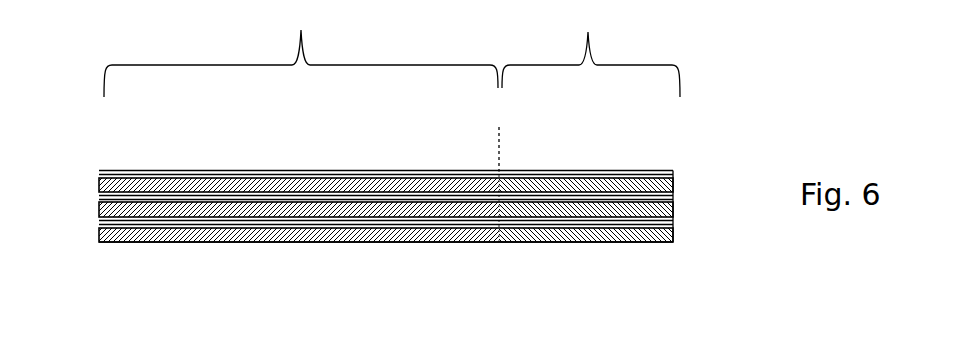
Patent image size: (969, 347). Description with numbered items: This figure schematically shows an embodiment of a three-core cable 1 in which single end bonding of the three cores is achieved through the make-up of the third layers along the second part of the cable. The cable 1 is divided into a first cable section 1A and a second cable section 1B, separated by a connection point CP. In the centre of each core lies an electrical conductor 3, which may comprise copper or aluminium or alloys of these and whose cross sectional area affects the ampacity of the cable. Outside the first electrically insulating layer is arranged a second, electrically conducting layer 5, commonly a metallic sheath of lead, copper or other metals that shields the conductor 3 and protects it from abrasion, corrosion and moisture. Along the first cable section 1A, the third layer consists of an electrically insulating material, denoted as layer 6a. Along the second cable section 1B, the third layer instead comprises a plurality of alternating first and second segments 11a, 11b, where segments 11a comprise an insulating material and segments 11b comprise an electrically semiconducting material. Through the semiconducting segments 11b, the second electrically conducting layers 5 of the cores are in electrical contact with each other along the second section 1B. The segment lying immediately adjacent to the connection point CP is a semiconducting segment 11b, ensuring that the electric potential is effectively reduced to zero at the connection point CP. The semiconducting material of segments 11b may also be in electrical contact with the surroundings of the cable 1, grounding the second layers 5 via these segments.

The cable 1 is at (432, 176).
The first cable section 1A is at (301, 48).
The second cable section 1B is at (591, 52).
The connection point CP is at (500, 169).
The electrical conductor 3 is at (560, 173).
The second electrically conducting layer 5 is at (673, 175).
The electrically insulating layer 6a is at (98, 189).
The first segments 11a is at (538, 243).
The second segments 11b is at (514, 243).